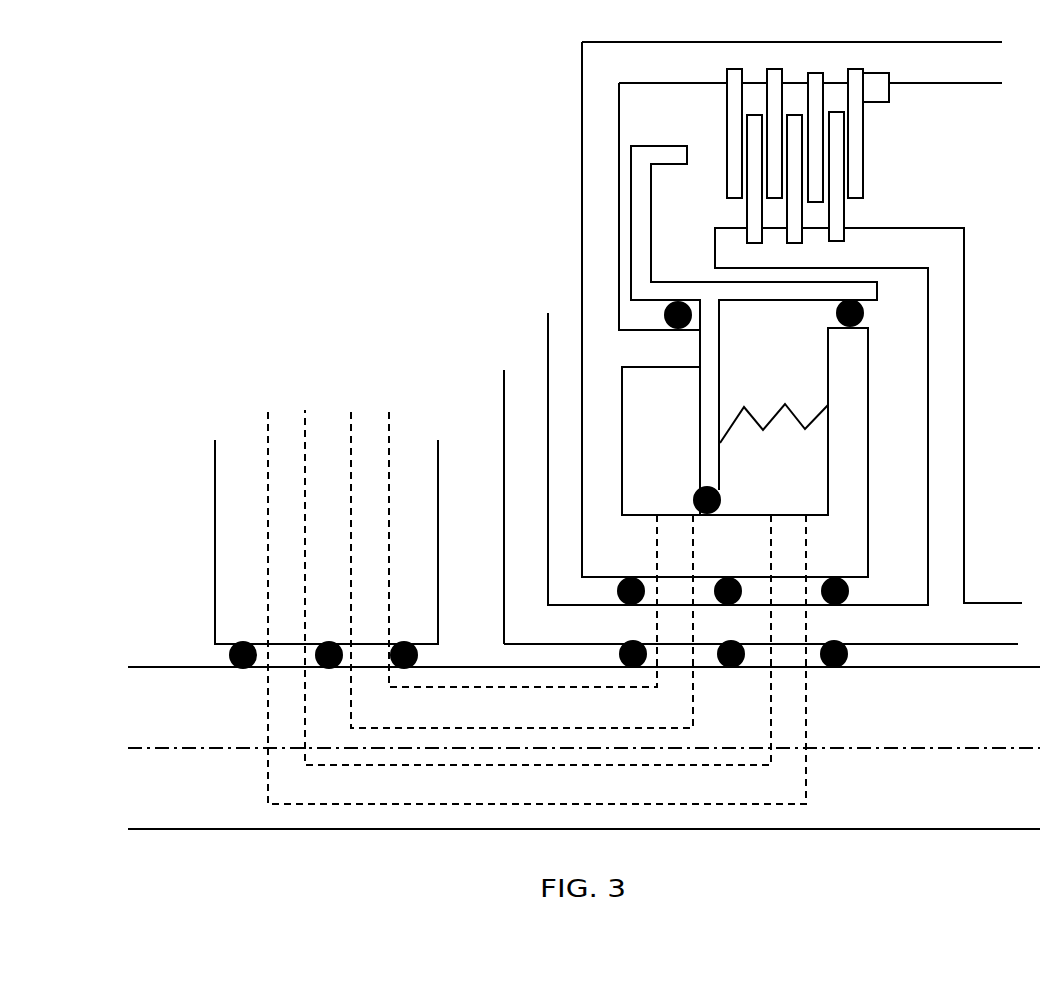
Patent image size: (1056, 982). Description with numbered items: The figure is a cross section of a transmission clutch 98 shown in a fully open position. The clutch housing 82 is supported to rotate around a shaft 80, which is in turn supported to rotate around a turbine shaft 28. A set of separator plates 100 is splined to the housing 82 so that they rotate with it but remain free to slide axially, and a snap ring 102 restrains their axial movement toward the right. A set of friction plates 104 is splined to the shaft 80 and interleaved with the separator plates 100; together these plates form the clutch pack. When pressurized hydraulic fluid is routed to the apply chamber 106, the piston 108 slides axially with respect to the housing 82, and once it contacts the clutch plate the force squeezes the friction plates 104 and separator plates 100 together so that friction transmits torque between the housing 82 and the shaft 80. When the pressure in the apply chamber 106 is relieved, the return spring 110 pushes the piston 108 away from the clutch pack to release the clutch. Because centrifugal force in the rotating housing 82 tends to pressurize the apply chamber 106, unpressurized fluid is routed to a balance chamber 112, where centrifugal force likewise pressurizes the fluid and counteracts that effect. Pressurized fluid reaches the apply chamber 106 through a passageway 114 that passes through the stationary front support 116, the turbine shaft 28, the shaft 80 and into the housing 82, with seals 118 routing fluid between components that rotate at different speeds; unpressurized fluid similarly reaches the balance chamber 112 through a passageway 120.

The turbine shaft 28 is at (163, 666).
The shaft 80 is at (964, 412).
The clutch housing 82 is at (582, 215).
The clutch 98 is at (428, 222).
The separator plates 100 is at (863, 163).
The snap ring 102 is at (890, 102).
The friction plates 104 is at (845, 212).
The apply chamber 106 is at (670, 407).
The piston 108 is at (750, 300).
The return spring 110 is at (784, 406).
The balance chamber 112 is at (810, 389).
The passageway 114 is at (655, 708).
The stationary front support 116 is at (440, 507).
The seals 118 is at (415, 657).
The passageway 120 is at (795, 786).